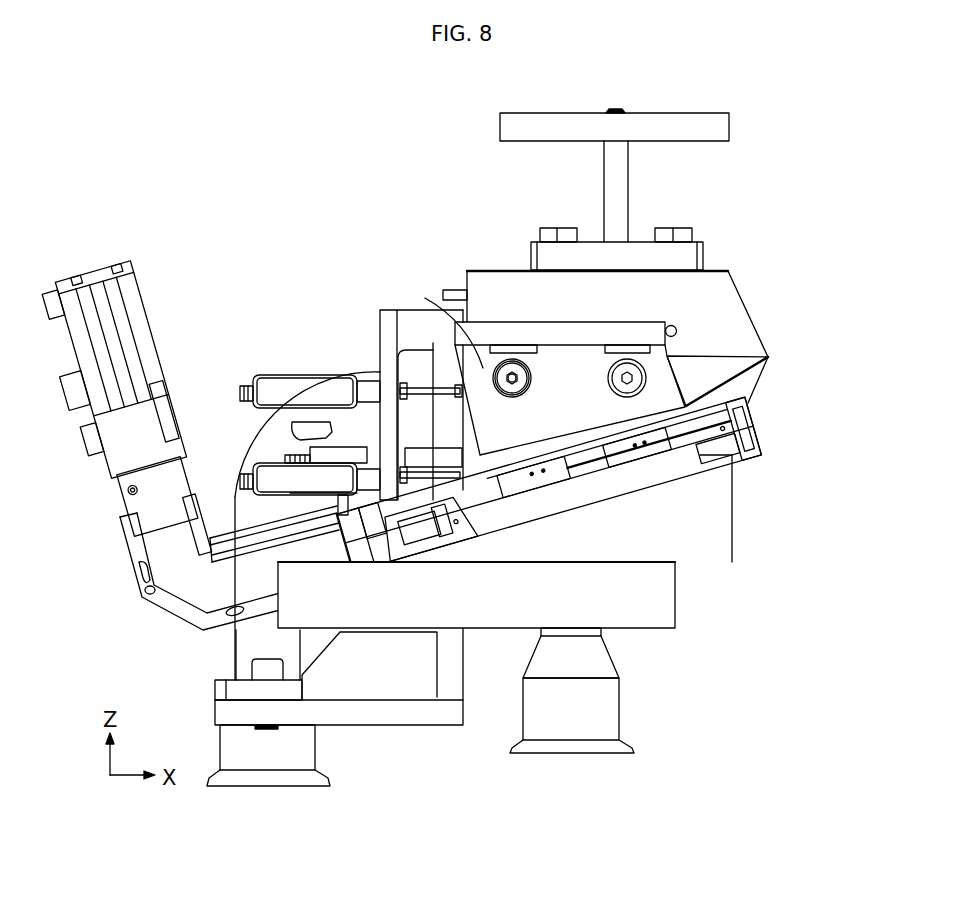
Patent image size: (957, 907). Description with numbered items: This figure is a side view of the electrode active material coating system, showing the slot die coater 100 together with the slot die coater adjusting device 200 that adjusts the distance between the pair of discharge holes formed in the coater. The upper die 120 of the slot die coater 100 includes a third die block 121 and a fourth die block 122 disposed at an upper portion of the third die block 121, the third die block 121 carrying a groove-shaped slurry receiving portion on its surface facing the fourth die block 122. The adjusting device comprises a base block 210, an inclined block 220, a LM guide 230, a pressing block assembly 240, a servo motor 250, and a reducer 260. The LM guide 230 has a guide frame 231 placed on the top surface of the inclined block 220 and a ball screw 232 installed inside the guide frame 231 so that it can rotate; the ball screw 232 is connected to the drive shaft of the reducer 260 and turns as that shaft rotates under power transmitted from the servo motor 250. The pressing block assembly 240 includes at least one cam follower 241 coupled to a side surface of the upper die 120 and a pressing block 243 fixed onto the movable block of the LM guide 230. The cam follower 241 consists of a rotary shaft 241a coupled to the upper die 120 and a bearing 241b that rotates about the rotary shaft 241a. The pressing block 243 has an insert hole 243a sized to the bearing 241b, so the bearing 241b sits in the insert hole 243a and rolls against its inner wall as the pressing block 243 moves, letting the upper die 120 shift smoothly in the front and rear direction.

The slot die coater 100 is at (663, 257).
The upper die 120 is at (775, 338).
The third die block 121 is at (757, 362).
The fourth die block 122 is at (743, 338).
The slot die coater adjusting device 200 is at (208, 322).
The base block 210 is at (671, 599).
The inclined block 220 is at (733, 522).
The LM guide 230 is at (581, 531).
The guide frame 231 is at (713, 452).
The ball screw 232 is at (495, 500).
The pressing block assembly 240 is at (602, 344).
The cam follower 241 is at (516, 341).
The rotary shaft 241a is at (506, 376).
The bearing 241b is at (514, 341).
The pressing block 243 is at (588, 323).
The insert hole 243a is at (609, 347).
The servo motor 250 is at (95, 270).
The reducer 260 is at (172, 610).